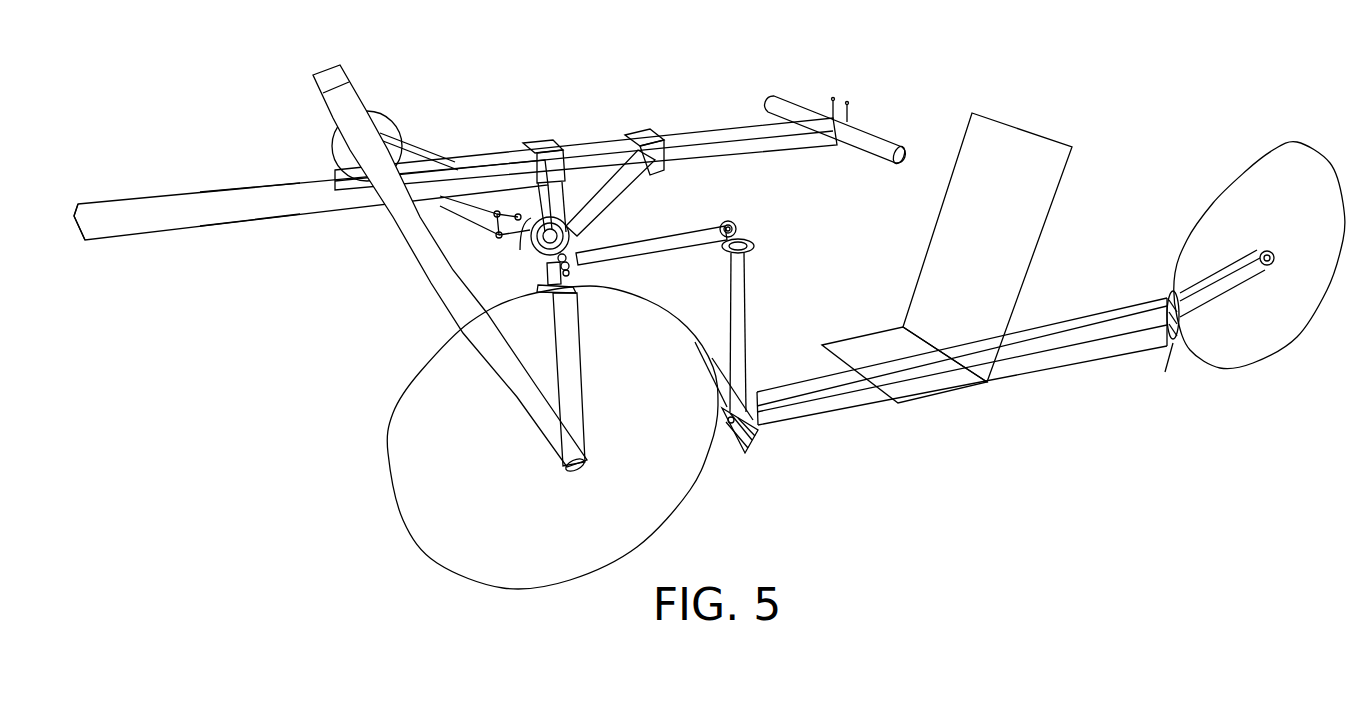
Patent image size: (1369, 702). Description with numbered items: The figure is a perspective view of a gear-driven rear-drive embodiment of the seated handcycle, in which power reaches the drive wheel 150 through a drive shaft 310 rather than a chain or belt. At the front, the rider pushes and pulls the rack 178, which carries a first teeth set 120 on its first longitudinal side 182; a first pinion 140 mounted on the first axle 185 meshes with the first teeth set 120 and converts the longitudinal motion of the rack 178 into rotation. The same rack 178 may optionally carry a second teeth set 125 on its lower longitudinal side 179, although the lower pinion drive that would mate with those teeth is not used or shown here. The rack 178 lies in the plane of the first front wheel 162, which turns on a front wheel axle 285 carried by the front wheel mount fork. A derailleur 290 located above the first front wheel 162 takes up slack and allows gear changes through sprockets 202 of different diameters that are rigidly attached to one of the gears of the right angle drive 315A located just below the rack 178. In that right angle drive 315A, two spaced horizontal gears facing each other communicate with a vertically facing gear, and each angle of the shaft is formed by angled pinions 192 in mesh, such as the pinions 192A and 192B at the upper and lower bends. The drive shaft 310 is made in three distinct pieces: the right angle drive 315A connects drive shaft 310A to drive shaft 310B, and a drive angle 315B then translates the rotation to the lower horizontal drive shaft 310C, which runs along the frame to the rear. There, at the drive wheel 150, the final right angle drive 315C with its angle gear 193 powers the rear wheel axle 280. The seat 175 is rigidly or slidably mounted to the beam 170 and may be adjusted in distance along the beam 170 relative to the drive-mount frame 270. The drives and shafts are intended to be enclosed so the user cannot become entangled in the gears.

The first teeth set 120 is at (120, 205).
The second teeth set 125 is at (127, 238).
The first pinion 140 is at (333, 140).
The drive wheel 150 is at (1290, 143).
The first front wheel 162 is at (390, 470).
The beam 170 is at (976, 396).
The seat 175 is at (975, 221).
The rack 178 is at (135, 228).
The lower longitudinal side 179 is at (292, 220).
The first longitudinal side 182 is at (220, 180).
The first axle 185 is at (1067, 373).
The pinions 192 is at (545, 277).
The pivot pin A 192A is at (752, 224).
The pivot pin B 192B is at (733, 448).
The angle gear 193 is at (1180, 379).
The sprockets 202 is at (605, 224).
The drive-mount frame 270 is at (434, 86).
The rear wheel axle 280 is at (1277, 270).
The front wheel axle 285 is at (592, 472).
The derailleur 290 is at (506, 241).
The drive shaft 310 is at (693, 228).
The drive shaft 310A is at (662, 258).
The drive shaft 310B is at (752, 345).
The lower horizontal drive shaft 310C is at (1014, 368).
The right angle drive 315A is at (757, 243).
The drive angle 315B is at (752, 455).
The pivot bracket C 315C is at (1170, 298).